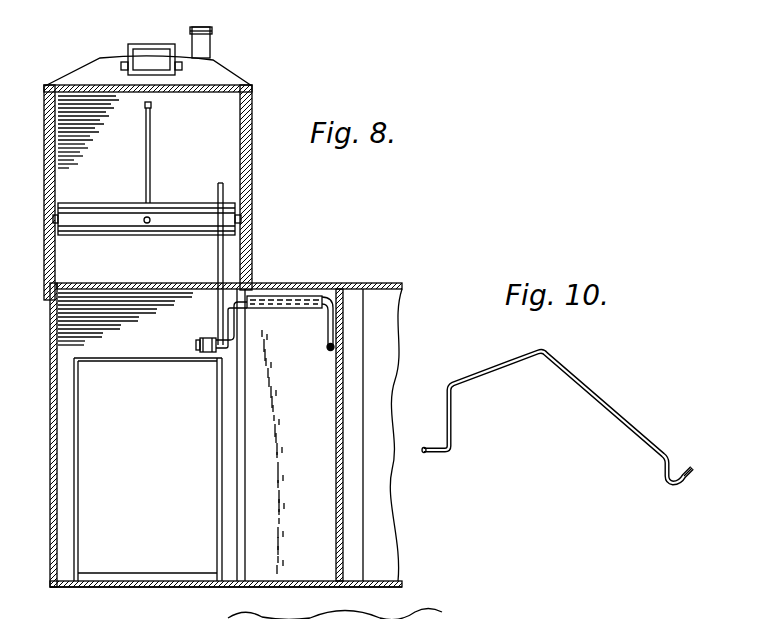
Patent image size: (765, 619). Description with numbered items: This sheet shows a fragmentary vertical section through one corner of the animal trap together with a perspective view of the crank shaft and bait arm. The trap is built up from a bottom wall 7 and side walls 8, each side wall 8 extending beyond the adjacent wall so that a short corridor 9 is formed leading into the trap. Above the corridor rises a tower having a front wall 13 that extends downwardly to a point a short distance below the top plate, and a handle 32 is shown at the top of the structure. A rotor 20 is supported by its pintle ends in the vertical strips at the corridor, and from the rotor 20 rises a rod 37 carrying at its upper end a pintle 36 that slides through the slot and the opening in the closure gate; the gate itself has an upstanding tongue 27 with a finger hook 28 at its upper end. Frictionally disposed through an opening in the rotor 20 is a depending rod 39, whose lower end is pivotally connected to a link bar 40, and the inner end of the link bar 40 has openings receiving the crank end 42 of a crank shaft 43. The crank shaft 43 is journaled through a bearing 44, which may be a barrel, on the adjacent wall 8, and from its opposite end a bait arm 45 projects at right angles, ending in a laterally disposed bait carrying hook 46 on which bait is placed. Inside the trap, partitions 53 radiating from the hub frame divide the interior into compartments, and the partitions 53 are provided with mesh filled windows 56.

In FIG. 8, the bottom wall 7 is at (160, 590).
In FIG. 8, the side wall 8 is at (50, 430).
In FIG. 8, the short corridor 9 is at (140, 570).
In FIG. 8, the front wall 13 is at (212, 148).
In FIG. 8, the rotor 20 is at (100, 211).
In FIG. 8, the upstanding tongue 27 is at (200, 56).
In FIG. 8, the finger hook 28 is at (200, 27).
In FIG. 8, the handle 32 is at (145, 44).
In FIG. 8, the pintle 36 is at (160, 110).
In FIG. 8, the rod 37 is at (152, 183).
In FIG. 8, the depending rod 39 is at (217, 253).
In FIG. 8, the link bar 40 is at (213, 358).
In FIG. 8, the crank end 42 is at (218, 322).
In FIG. 10, the crank end 42 is at (437, 452).
In FIG. 10, the crank shaft 43 is at (510, 368).
In FIG. 8, the bearing 44 is at (297, 308).
In FIG. 8, the bait arm 45 is at (327, 336).
In FIG. 10, the bait carrying hook 46 is at (665, 483).
In FIG. 8, the partition 53 is at (333, 445).
In FIG. 8, the mesh filled window 56 is at (388, 617).